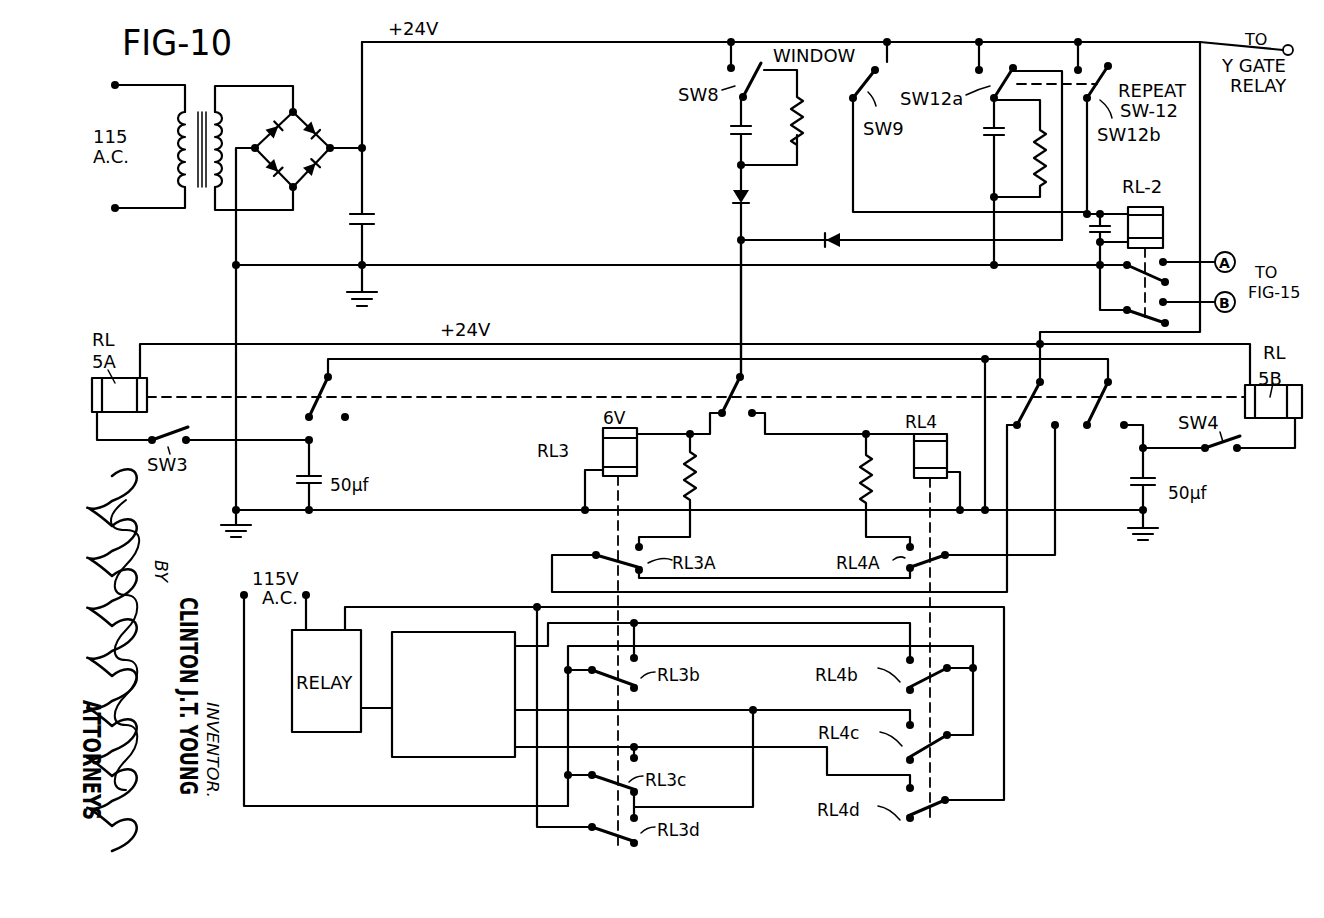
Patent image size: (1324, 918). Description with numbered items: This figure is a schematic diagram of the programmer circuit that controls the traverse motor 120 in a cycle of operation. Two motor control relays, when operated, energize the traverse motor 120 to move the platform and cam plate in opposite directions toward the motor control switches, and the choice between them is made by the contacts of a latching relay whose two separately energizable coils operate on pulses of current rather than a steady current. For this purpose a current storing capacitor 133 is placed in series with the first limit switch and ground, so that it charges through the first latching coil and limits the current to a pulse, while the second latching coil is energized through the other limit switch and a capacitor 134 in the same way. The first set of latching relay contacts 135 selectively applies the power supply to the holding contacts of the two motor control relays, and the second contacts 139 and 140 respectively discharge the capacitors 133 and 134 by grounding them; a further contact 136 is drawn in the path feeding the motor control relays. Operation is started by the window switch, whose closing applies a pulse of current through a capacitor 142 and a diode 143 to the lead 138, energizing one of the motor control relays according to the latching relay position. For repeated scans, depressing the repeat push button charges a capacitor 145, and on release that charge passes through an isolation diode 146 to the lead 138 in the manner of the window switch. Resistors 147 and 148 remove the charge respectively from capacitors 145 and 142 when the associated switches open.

The traverse motor 120 is at (470, 744).
The current storing capacitor 133 is at (300, 482).
The capacitor 134 is at (1131, 484).
The first set of latching relay contacts 135 is at (1037, 418).
The contact 136 is at (735, 420).
The lead 138 is at (742, 293).
The latching relay contact 139 is at (338, 410).
The latching relay contact 140 is at (1108, 418).
The capacitor 142 is at (730, 130).
The diode 143 is at (732, 196).
The capacitor 145 is at (986, 136).
The isolation diode 146 is at (830, 235).
The resistor 147 is at (1042, 148).
The resistor 148 is at (809, 117).